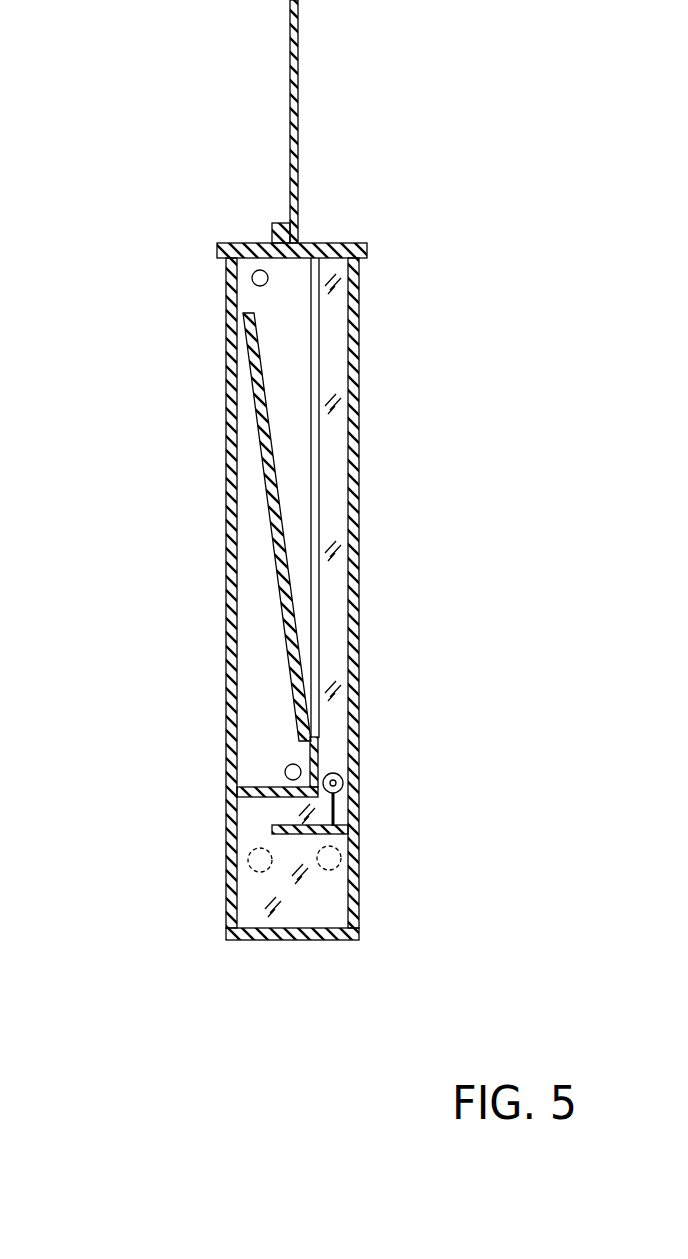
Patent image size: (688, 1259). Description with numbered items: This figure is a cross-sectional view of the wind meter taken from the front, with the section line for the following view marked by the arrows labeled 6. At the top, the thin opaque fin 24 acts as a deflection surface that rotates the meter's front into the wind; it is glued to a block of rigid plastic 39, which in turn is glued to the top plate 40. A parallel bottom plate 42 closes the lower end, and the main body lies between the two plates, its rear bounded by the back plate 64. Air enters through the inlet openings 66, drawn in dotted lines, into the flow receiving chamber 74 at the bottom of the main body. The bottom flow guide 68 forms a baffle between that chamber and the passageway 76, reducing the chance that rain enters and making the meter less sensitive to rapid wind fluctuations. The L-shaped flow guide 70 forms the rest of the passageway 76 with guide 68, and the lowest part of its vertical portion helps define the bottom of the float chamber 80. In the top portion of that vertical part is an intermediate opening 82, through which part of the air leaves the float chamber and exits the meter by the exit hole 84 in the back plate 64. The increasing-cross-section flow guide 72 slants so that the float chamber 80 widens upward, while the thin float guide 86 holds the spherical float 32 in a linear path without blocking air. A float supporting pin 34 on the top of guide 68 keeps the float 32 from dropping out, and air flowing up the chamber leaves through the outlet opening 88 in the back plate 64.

The fin 24 is at (298, 87).
The block of rigid plastic 39 is at (272, 226).
The top plate 40 is at (227, 243).
The back plate 64 is at (258, 610).
The bottom plate 42 is at (228, 940).
The float guide 86 is at (320, 382).
The float chamber 80 is at (326, 510).
The increasing-cross-section flow guide 72 is at (261, 471).
The outlet opening 88 is at (253, 282).
The exit hole 84 is at (290, 770).
The intermediate opening 82 is at (322, 747).
The L-shaped flow guide 70 is at (238, 798).
The float 32 is at (343, 777).
The float supporting pin 34 is at (336, 812).
The bottom flow guide 68 is at (350, 838).
The passageway 76 is at (292, 810).
The inlet openings 66 is at (325, 861).
The flow receiving chamber 74 is at (302, 904).
The section line 6- 6 is at (320, 176).